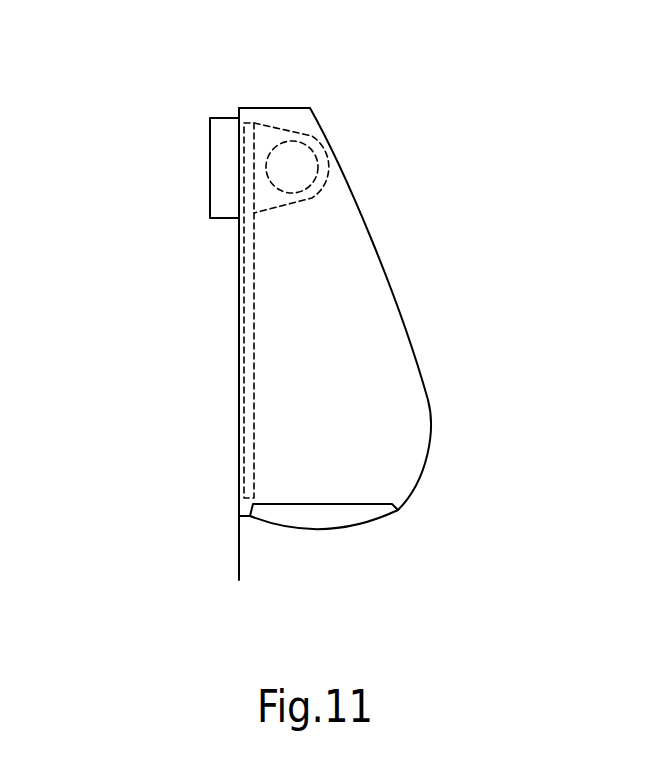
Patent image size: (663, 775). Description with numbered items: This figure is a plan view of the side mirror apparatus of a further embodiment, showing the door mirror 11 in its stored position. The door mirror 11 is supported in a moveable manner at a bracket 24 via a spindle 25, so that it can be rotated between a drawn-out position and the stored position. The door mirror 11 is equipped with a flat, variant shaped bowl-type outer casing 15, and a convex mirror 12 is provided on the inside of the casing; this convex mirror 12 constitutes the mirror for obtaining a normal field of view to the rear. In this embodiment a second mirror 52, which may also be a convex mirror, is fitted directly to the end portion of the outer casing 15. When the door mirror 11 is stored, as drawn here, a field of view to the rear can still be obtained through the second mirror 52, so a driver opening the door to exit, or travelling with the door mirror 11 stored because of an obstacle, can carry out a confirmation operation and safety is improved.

The door mirror 11 is at (372, 344).
The convex mirror 12 is at (247, 388).
The outer casing 15 is at (413, 400).
The bracket 24 is at (215, 168).
The spindle 25 is at (312, 158).
The second mirror 52 is at (327, 518).